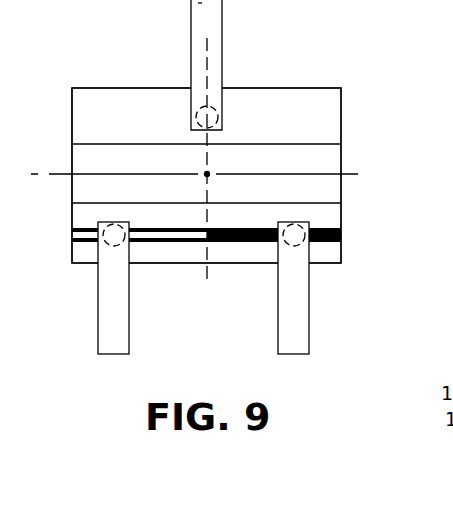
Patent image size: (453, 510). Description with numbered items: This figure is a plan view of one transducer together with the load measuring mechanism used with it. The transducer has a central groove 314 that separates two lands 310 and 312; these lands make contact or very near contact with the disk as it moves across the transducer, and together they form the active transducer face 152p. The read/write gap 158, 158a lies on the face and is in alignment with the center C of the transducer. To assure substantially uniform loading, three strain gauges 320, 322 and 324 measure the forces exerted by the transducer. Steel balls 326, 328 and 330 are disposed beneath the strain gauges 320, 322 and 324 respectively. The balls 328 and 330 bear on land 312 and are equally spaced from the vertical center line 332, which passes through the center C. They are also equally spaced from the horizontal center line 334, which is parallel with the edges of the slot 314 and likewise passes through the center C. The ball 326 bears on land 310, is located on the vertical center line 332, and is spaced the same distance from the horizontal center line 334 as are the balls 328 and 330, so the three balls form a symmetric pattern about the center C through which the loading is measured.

The active transducer face 152p is at (320, 108).
The land 310 is at (72, 107).
The central groove 314 is at (72, 158).
The land 312 is at (72, 222).
The read/write gap 158 is at (72, 231).
The read/write gap 158a is at (205, 229).
The strain gauge 320 is at (222, 17).
The steel ball 326 is at (222, 88).
The strain gauge 322 is at (98, 325).
The strain gauge 324 is at (310, 330).
The steel ball 328 is at (117, 248).
The steel ball 330 is at (297, 249).
The vertical center line 332 is at (205, 295).
The horizontal center line 334 is at (368, 177).
The center of the transducer C is at (212, 177).